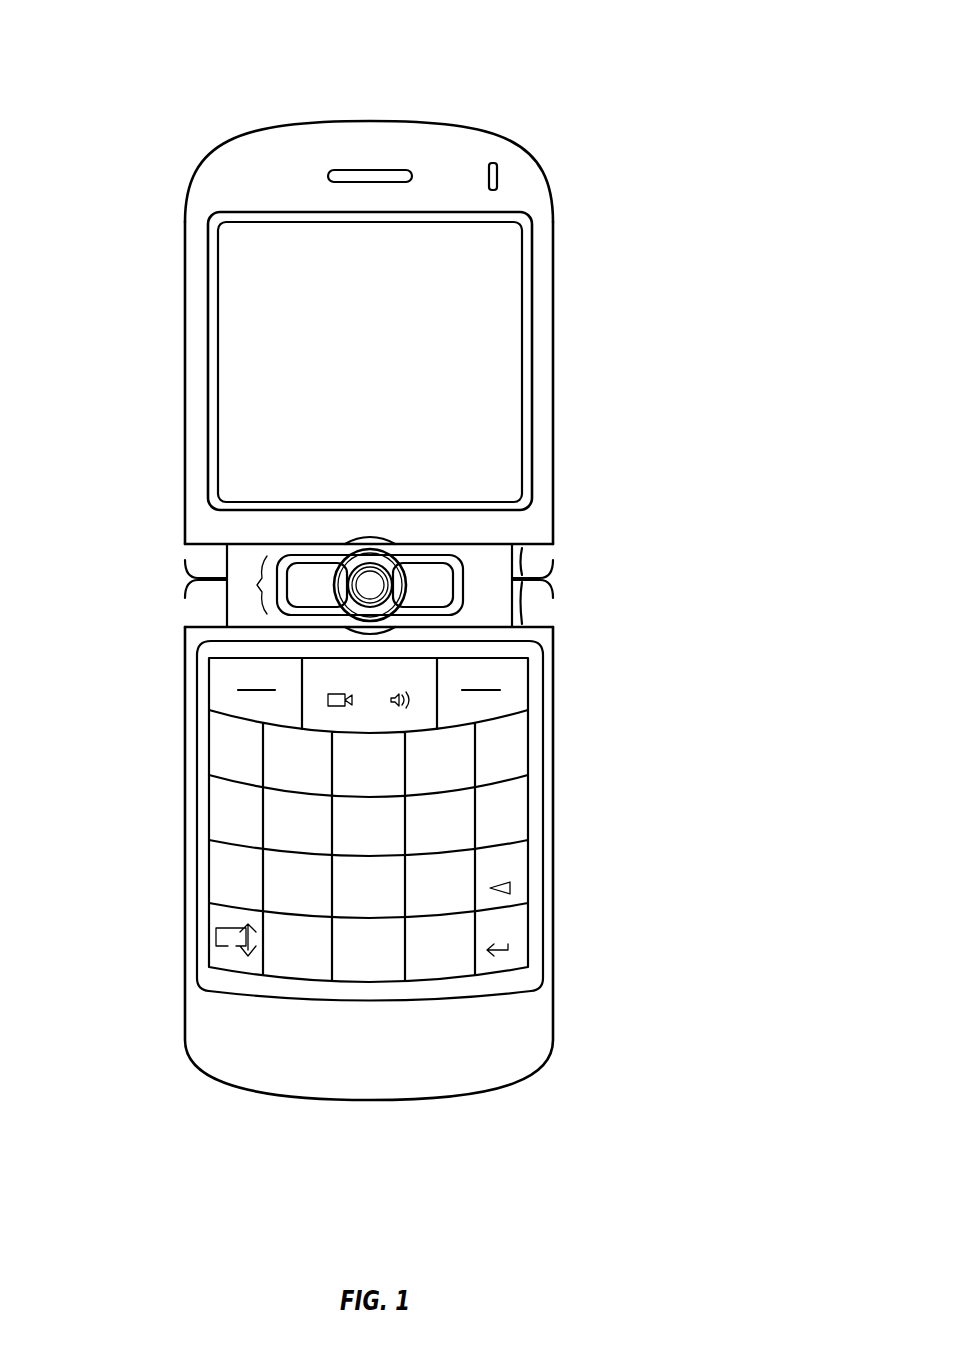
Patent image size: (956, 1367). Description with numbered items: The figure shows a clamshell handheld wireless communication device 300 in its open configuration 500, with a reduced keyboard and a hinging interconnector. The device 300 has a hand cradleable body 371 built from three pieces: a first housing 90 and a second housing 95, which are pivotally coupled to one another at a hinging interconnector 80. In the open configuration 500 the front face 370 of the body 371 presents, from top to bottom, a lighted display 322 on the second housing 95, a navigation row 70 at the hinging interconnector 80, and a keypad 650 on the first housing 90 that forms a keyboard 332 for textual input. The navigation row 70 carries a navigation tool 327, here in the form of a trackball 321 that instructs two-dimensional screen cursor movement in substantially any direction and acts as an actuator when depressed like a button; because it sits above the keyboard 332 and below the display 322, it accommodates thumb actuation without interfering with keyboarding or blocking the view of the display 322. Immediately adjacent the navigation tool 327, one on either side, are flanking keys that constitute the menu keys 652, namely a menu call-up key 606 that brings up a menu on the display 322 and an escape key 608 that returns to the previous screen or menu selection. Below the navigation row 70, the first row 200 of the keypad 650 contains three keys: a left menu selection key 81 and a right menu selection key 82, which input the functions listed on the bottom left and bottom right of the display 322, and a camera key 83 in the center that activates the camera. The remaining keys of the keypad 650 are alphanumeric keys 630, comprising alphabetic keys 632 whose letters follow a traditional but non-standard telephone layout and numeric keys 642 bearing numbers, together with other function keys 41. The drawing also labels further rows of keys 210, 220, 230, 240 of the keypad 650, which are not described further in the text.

The handheld wireless communication device 300 is at (554, 40).
The open configuration 500 is at (164, 104).
The second housing 95 is at (448, 146).
The hand cradleable body 371 is at (543, 177).
The display 322 is at (250, 290).
The front face 370 is at (482, 554).
The navigation row 70 is at (262, 588).
The hinging interconnector 80 is at (550, 580).
The menu call-up key 606 is at (298, 578).
The menu keys 652 is at (427, 578).
The escape key 608 is at (440, 578).
The navigation tool 327 is at (331, 593).
The trackball 321 is at (372, 588).
The first housing 90 is at (521, 1063).
The keyboard 332 is at (316, 1002).
The keypad 650 is at (206, 977).
The first row 200 is at (206, 700).
The left menu selection key 81 is at (229, 672).
The right menu selection key 82 is at (502, 672).
The camera key 83 is at (415, 698).
The first row of keys 210 is at (206, 746).
The second row of keys 220 is at (206, 806).
The third row of keys 230 is at (206, 868).
The fourth row of keys 240 is at (206, 932).
The alphanumeric keys 630 is at (455, 767).
The alphabetic keys 632 is at (513, 826).
The function keys 41 is at (278, 964).
The numeric keys 642 is at (383, 943).